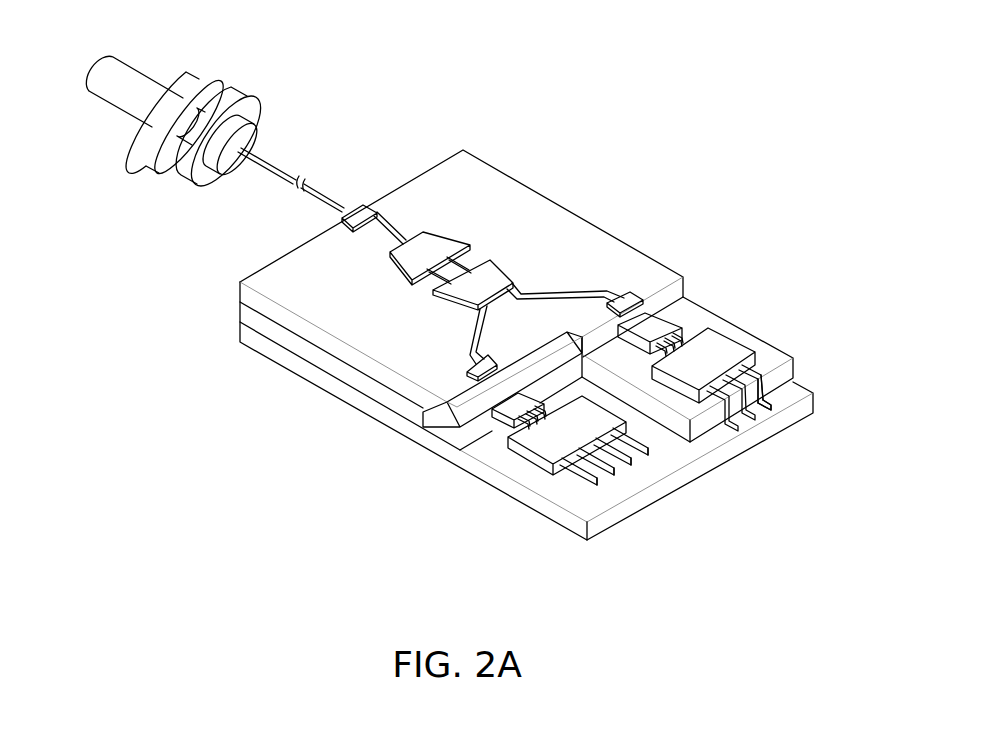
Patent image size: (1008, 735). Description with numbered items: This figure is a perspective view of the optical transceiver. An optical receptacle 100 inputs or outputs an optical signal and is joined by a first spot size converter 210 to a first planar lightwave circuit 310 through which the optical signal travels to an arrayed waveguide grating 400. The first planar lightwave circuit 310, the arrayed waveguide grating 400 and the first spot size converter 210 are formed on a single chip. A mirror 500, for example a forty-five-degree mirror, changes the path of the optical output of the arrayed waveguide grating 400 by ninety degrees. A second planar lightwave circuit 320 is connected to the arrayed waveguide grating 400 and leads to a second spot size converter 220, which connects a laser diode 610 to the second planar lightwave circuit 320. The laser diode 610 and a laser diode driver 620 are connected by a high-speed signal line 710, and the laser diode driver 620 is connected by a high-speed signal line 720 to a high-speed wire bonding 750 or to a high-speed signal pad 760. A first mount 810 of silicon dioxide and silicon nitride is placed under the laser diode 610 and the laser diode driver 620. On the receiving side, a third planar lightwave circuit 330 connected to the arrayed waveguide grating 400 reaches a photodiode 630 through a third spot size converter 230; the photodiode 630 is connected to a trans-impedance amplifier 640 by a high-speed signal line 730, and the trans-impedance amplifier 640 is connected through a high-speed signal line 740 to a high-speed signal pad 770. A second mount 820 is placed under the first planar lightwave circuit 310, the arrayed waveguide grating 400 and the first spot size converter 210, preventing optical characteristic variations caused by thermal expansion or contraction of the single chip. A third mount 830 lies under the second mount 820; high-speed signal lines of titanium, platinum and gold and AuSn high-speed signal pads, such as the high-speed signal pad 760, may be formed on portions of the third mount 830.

The optical receptacle 100 is at (232, 97).
The first spot size converter 210 is at (362, 210).
The second spot size converter 220 is at (632, 291).
The third spot size converter 230 is at (465, 381).
The first planar lightwave circuit 310 is at (390, 233).
The second planar lightwave circuit 320 is at (565, 292).
The third planar lightwave circuit 330 is at (467, 372).
The arrayed waveguide grating 400 is at (490, 258).
The mirror 500 is at (577, 350).
The laser diode 610 is at (654, 320).
The laser diode driver 620 is at (732, 351).
The photodiode 630 is at (497, 410).
The trans-impedance amplifier (TIA) 640 is at (528, 458).
The high-speed signal line 710 is at (678, 343).
The high-speed signal line 720 is at (743, 368).
The high-speed signal line 730 is at (538, 415).
The high-speed signal line 740 is at (578, 478).
The high-speed wire bonding 750 is at (768, 390).
The high-speed signal pad 760 is at (764, 407).
The high-speed signal pad 770 is at (594, 488).
The first mount 810 is at (708, 424).
The second mount 820 is at (325, 360).
The third mount 830 is at (262, 346).